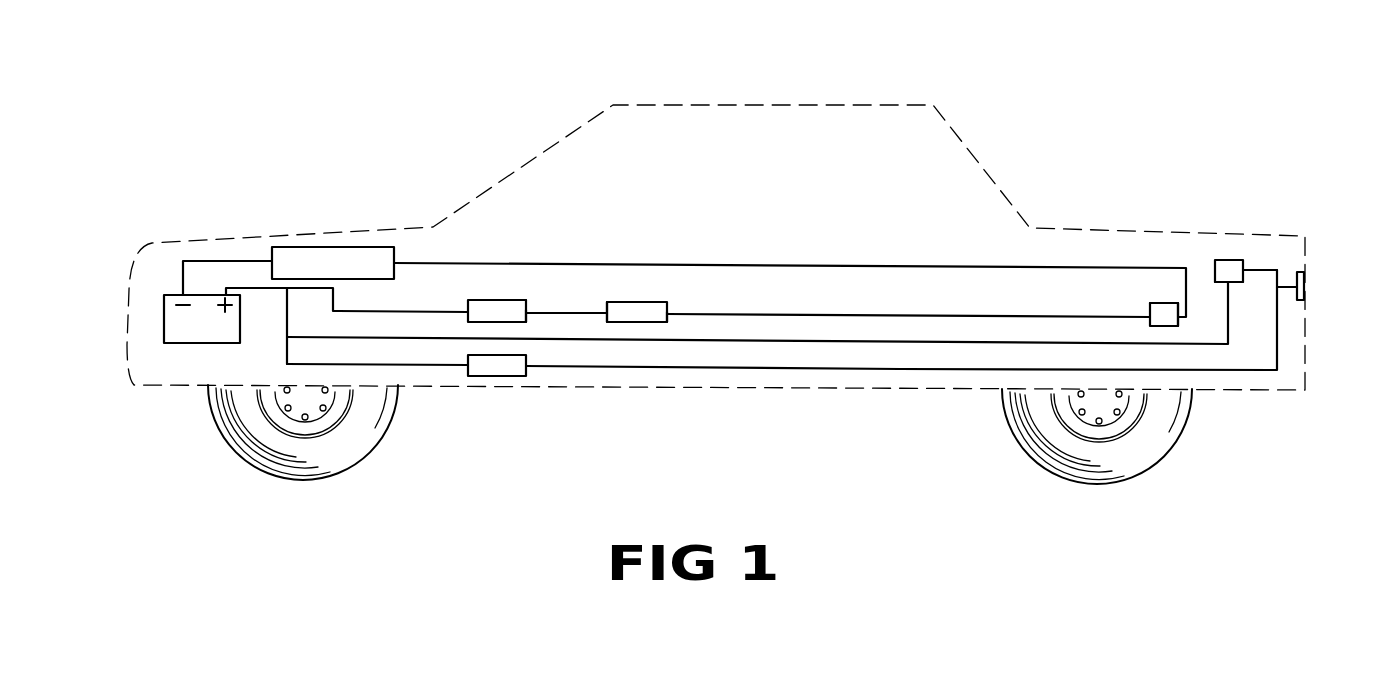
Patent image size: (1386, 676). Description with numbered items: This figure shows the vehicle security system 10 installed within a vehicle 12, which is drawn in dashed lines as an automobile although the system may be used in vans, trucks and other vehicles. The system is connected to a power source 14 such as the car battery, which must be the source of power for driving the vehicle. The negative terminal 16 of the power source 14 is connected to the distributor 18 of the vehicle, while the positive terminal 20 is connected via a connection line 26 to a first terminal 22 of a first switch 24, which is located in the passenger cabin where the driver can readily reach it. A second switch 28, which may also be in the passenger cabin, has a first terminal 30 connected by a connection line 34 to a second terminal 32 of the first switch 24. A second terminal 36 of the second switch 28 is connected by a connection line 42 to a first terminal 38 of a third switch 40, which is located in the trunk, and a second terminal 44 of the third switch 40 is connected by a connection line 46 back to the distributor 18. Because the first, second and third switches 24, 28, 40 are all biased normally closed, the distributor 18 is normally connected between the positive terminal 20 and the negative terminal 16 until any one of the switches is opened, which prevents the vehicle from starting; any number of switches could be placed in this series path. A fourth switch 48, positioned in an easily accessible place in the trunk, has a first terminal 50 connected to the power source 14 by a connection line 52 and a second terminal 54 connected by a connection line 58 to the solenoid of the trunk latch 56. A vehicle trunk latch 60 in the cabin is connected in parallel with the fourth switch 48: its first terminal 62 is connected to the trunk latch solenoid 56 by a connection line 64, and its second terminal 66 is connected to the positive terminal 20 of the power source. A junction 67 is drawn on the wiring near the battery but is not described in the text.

The vehicle security system 10 is at (360, 68).
The vehicle 12 is at (537, 158).
The power source 14 is at (172, 342).
The negative terminal 16 is at (183, 282).
The distributor 18 is at (282, 247).
The positive terminal 20 is at (228, 290).
The first terminal of first switch 22 is at (466, 302).
The first switch 24 is at (514, 301).
The connection line 26 is at (408, 309).
The second switch 28 is at (648, 304).
The first terminal of second switch 30 is at (606, 311).
The second terminal of first switch 32 is at (529, 316).
The connection line 34 is at (573, 314).
The second terminal of second switch 36 is at (670, 316).
The first terminal of third switch 38 is at (1150, 320).
The third switch 40 is at (1160, 308).
The connection line 42 is at (765, 313).
The second terminal of third switch 44 is at (1180, 314).
The connection line 46 is at (580, 263).
The fourth switch 48 is at (1235, 260).
The first terminal of fourth switch 50 is at (1232, 283).
The connection line 52 is at (889, 340).
The second terminal of fourth switch 54 is at (1250, 270).
The trunk latch solenoid 56 is at (1305, 287).
The connection line 58 is at (1279, 270).
The vehicle trunk latch 60 is at (505, 376).
The first terminal of vehicle trunk latch 62 is at (530, 366).
The connection line 64 is at (1240, 372).
The second terminal of vehicle trunk latch 66 is at (466, 368).
The junction 67 is at (286, 345).